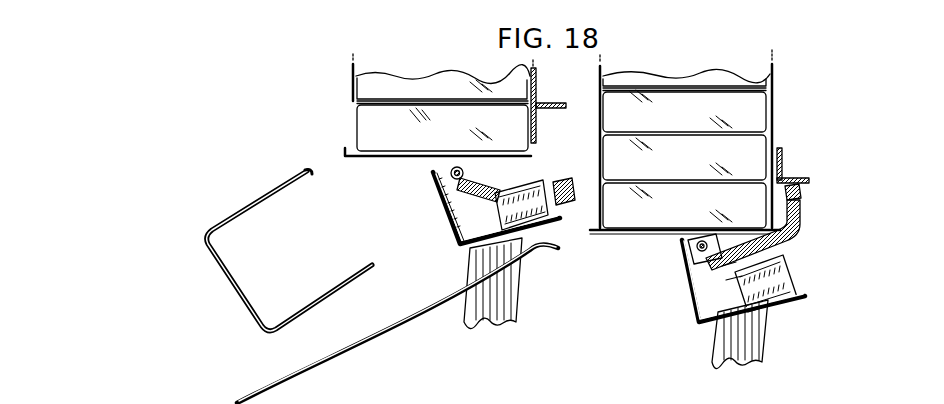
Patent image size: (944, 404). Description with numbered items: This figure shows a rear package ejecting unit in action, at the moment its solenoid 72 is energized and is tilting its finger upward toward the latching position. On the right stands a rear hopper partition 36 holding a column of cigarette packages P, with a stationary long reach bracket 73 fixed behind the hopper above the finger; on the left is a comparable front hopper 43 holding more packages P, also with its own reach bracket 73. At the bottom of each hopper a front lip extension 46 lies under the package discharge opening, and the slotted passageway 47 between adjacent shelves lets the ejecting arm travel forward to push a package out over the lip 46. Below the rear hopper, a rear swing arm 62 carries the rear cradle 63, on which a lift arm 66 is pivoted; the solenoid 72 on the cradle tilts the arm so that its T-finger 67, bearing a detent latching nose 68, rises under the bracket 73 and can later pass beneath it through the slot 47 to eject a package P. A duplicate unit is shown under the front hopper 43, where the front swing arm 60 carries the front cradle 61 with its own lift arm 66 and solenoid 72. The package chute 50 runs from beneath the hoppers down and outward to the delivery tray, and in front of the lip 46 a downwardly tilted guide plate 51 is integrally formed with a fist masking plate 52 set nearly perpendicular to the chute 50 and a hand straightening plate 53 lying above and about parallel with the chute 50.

The cigarette package P is at (390, 82).
The rear hopper partition 36 is at (773, 85).
The front hopper 43 is at (353, 92).
The front lip extension 46 is at (350, 154).
The slotted passageway 47 is at (393, 162).
The package chute 50 is at (233, 390).
The guide plate 51 is at (262, 192).
The fist masking plate 52 is at (228, 286).
The hand straightening plate 53 is at (333, 297).
The front swing arm 60 is at (506, 300).
The front cradle 61 is at (465, 246).
The rear swing arm 62 is at (762, 345).
The rear cradle 63 is at (698, 322).
The lift arm 66 is at (556, 203).
The T-finger 67 is at (800, 213).
The detent latching nose 68 is at (801, 191).
The solenoid 72 is at (518, 190).
The long reach bracket 73 is at (545, 104).